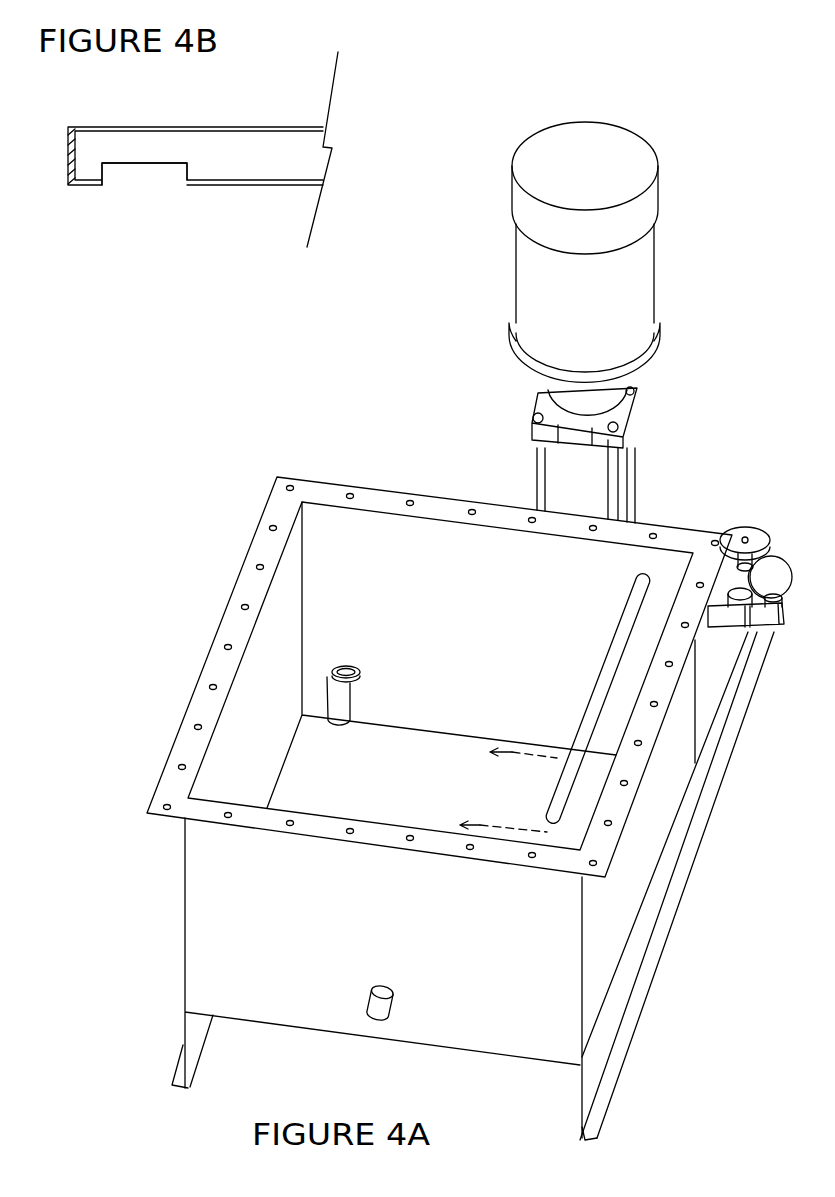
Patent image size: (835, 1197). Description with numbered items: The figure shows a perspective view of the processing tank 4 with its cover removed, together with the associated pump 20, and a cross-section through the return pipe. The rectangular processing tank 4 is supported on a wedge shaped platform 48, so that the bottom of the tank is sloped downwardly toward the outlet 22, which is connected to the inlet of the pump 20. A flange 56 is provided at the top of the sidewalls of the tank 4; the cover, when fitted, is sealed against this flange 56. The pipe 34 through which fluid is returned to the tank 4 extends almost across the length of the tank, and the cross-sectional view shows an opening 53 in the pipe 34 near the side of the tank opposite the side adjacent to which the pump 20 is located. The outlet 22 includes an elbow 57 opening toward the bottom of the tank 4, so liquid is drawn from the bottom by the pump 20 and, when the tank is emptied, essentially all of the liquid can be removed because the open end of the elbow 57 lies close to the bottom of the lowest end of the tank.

In FIG. 4A, the processing tank 4 is at (387, 478).
In FIG. 4A, the pump 20 is at (623, 480).
In FIG. 4A, the outlet 22 is at (377, 660).
In FIG. 4B, the pipe 34 is at (182, 127).
In FIG. 4A, the pipe 34 is at (612, 645).
In FIG. 4A, the wedge shaped platform 48 is at (622, 1002).
In FIG. 4B, the opening 53 is at (138, 172).
In FIG. 4A, the flange 56 is at (262, 542).
In FIG. 4A, the elbow 57 is at (327, 690).